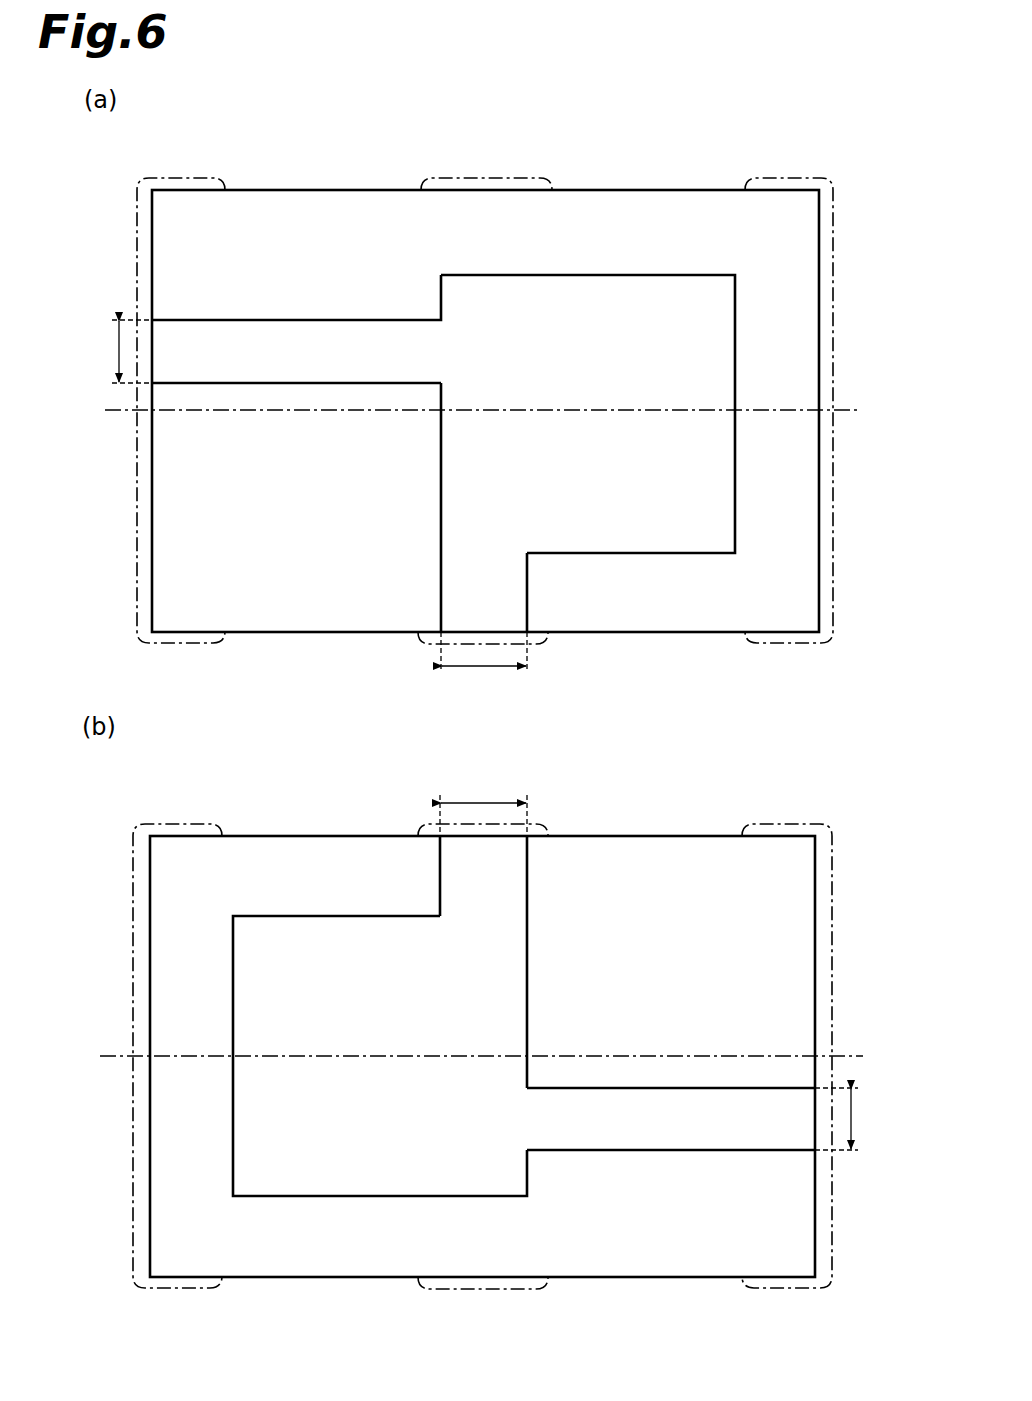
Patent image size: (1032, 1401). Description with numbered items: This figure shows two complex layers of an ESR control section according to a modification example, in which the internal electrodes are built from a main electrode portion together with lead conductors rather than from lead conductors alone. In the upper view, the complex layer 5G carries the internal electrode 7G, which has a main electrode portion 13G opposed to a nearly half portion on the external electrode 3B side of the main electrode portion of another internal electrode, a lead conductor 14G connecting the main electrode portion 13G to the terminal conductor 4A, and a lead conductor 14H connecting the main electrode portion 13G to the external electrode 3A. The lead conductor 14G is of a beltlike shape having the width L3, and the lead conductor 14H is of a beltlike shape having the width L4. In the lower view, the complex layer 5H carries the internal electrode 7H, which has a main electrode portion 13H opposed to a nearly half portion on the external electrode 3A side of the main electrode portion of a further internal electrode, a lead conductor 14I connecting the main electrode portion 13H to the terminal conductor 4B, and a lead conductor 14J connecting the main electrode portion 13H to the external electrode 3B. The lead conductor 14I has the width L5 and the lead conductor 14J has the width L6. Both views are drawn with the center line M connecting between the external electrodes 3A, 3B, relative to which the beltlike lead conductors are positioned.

The complex layer 5G is at (812, 158).
The complex layer 5H is at (810, 805).
The external electrode 3A is at (143, 282).
The external electrode 3B is at (824, 283).
The terminal conductor 4A is at (547, 642).
The terminal conductor 4B is at (522, 185).
The internal electrode 7G is at (443, 421).
The internal electrode 7H is at (524, 1045).
The main electrode portion 13G is at (652, 305).
The main electrode portion 13H is at (350, 1150).
The lead conductor 14G is at (458, 598).
The lead conductor 14H is at (293, 328).
The lead conductor 14I is at (508, 870).
The lead conductor 14J is at (683, 1100).
The center line M is at (855, 410).
The width L3 is at (484, 664).
The width L4 is at (116, 351).
The width L5 is at (483, 804).
The width L6 is at (851, 1119).